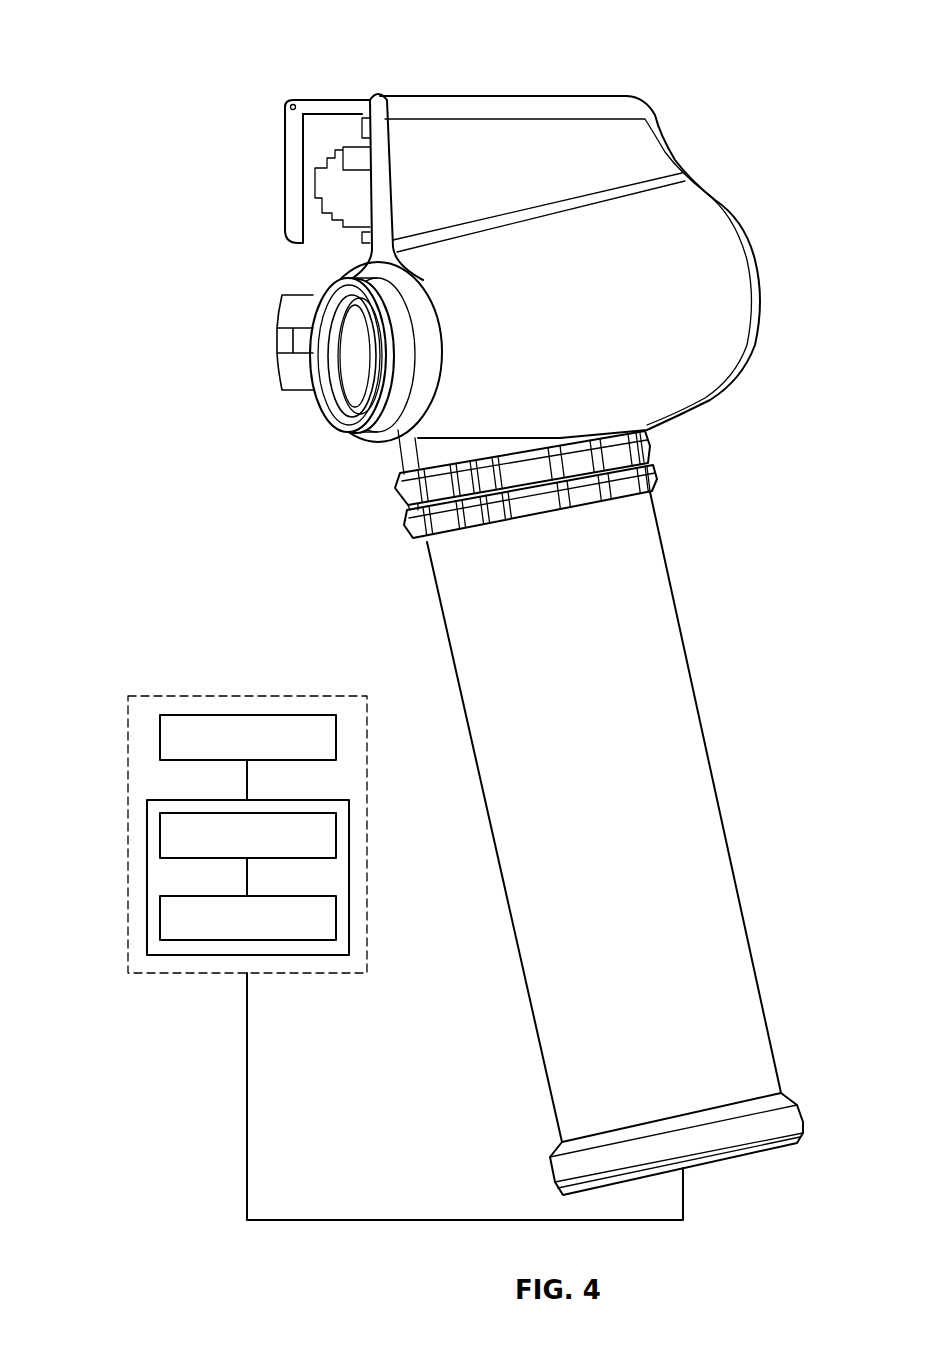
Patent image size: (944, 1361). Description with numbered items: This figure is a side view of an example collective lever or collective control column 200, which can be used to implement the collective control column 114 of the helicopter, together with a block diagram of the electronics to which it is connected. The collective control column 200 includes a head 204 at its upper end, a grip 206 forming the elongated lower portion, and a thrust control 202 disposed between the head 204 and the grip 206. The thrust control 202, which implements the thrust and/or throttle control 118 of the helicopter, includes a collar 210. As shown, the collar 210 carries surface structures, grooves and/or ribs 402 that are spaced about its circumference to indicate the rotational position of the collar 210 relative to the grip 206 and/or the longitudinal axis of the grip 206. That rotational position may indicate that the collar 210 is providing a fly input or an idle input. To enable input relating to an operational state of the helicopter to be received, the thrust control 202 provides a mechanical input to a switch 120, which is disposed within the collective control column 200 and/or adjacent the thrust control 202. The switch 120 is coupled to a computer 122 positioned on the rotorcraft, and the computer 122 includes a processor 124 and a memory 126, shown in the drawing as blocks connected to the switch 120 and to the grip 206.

The collective control column 200 is at (482, 605).
The collective control column 114 is at (258, 50).
The head 204 is at (728, 268).
The collar 210 is at (656, 460).
The ribs 402 is at (600, 512).
The thrust control 202 is at (501, 498).
The thrust control 118 is at (376, 530).
The grip 206 is at (673, 717).
The switch 120 is at (159, 739).
The computer 122 is at (147, 873).
The processor 124 is at (159, 834).
The memory 126 is at (159, 919).